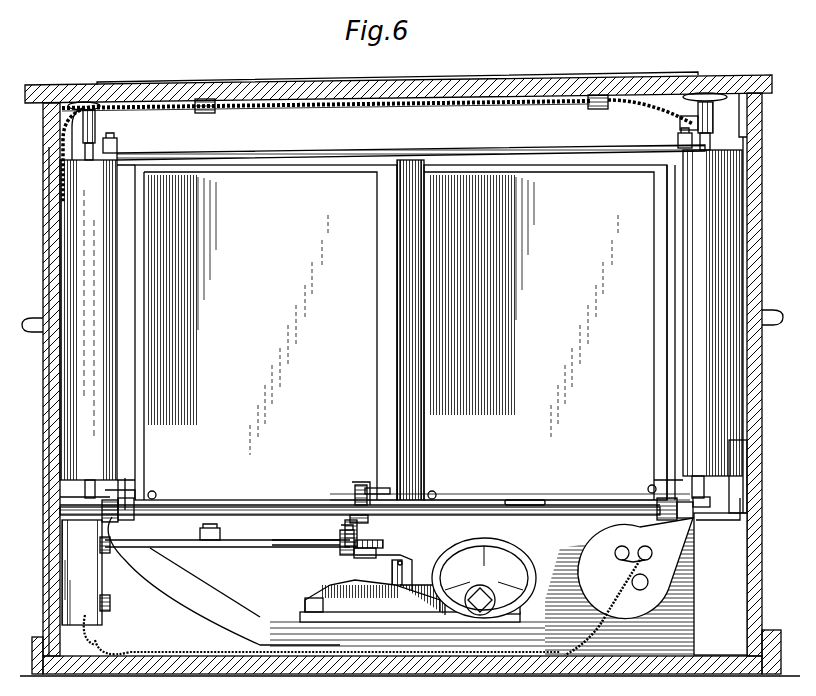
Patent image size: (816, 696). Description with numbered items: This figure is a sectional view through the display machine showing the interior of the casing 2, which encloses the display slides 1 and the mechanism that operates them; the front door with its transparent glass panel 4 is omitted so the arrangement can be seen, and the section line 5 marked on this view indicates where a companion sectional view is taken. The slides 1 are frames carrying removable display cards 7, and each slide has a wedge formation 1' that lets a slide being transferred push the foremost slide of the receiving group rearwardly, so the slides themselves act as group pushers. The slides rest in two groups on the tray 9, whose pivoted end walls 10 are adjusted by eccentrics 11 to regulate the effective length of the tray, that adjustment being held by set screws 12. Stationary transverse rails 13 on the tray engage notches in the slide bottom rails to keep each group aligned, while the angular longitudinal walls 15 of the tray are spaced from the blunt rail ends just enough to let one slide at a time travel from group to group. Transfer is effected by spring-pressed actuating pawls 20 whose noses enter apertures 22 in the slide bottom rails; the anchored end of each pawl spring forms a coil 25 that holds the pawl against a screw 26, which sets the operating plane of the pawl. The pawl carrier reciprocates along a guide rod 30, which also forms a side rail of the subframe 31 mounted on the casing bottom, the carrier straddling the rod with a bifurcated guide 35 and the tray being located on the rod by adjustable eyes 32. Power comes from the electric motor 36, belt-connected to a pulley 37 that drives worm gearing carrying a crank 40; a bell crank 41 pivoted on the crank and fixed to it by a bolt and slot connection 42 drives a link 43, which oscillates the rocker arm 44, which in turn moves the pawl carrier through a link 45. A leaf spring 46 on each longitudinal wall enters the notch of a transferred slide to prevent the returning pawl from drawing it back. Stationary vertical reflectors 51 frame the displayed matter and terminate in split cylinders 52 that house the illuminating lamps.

The display slide 1 is at (401, 332).
The wedge formation 1' is at (385, 330).
The casing 2 is at (753, 258).
The transparent glass panel 4 is at (39, 491).
The section line 5 is at (39, 515).
The display card 7 is at (338, 182).
The tray 9 is at (40, 400).
The end wall 10 is at (128, 500).
The eccentric 11 is at (112, 504).
The set screw 12 is at (100, 517).
The stationary rail 13 is at (501, 508).
The longitudinal wall 15 is at (272, 500).
The actuating pawl 20 is at (368, 492).
The aperture 22 is at (153, 492).
The coil 25 is at (510, 501).
The screw 26 is at (357, 485).
The guide rod 30 is at (255, 498).
The subframe 31 is at (686, 590).
The eye 32 is at (150, 500).
The bifurcated guide 35 is at (359, 526).
The electric motor 36 is at (612, 553).
The pulley 37 is at (538, 555).
The crank 40 is at (385, 568).
The bell crank 41 is at (350, 555).
The bolt and slot connection 42 is at (372, 545).
The link 43 is at (315, 548).
The rocker arm 44 is at (205, 548).
The link 45 is at (185, 553).
The leaf spring 46 is at (525, 500).
The stationary vertical reflector 51 is at (138, 272).
The split cylinder 52 is at (76, 256).